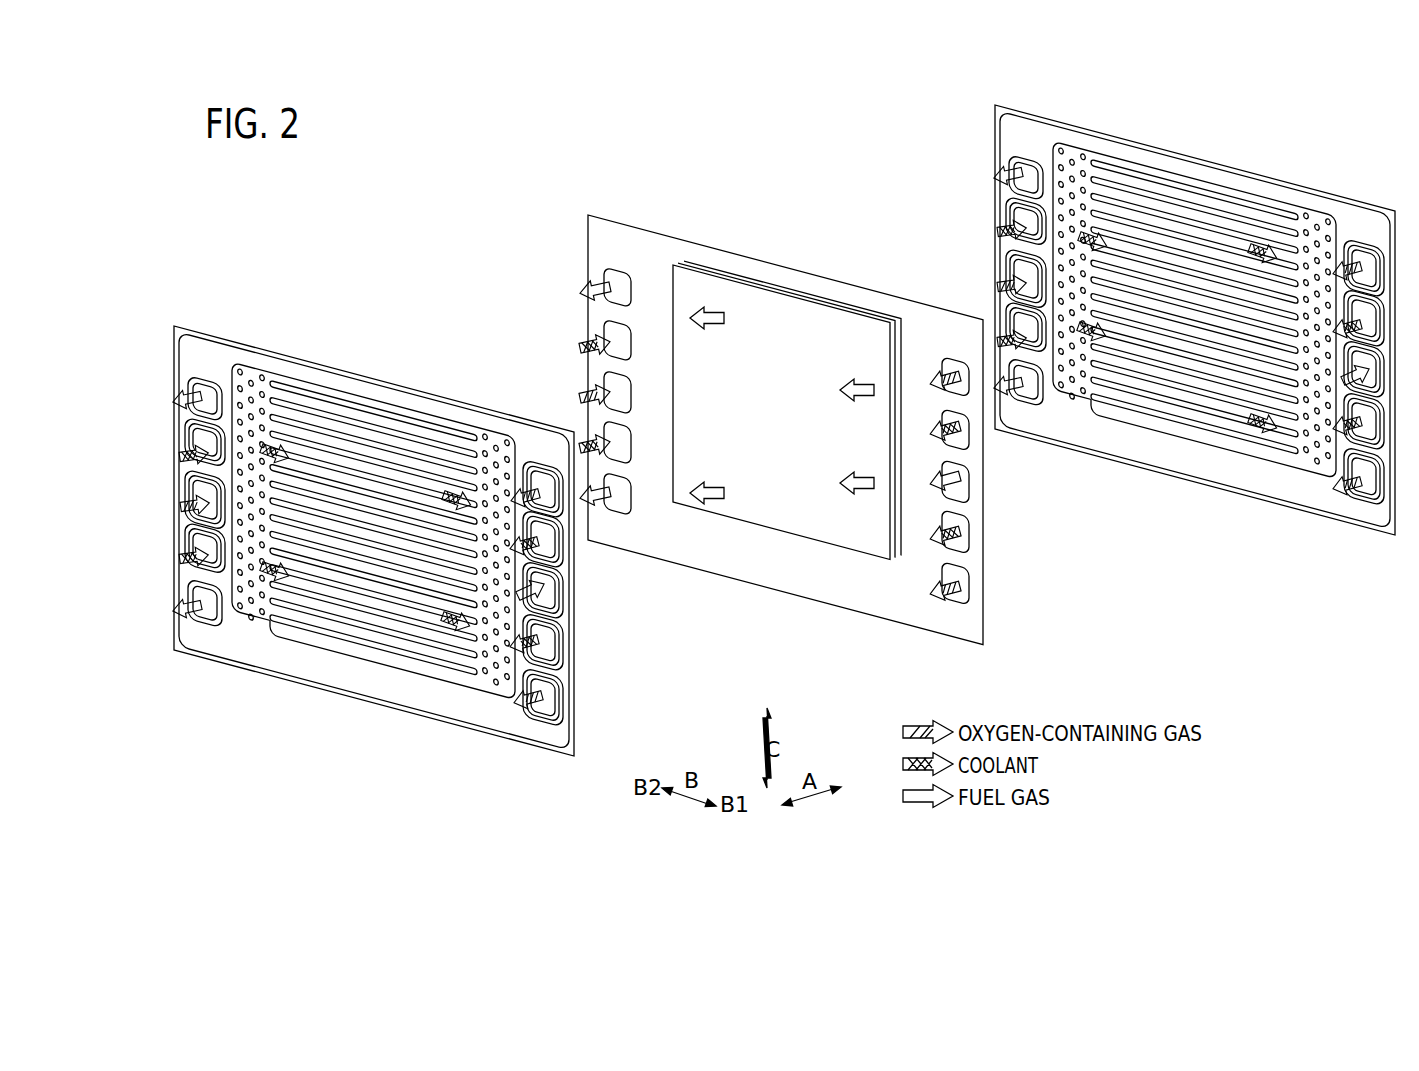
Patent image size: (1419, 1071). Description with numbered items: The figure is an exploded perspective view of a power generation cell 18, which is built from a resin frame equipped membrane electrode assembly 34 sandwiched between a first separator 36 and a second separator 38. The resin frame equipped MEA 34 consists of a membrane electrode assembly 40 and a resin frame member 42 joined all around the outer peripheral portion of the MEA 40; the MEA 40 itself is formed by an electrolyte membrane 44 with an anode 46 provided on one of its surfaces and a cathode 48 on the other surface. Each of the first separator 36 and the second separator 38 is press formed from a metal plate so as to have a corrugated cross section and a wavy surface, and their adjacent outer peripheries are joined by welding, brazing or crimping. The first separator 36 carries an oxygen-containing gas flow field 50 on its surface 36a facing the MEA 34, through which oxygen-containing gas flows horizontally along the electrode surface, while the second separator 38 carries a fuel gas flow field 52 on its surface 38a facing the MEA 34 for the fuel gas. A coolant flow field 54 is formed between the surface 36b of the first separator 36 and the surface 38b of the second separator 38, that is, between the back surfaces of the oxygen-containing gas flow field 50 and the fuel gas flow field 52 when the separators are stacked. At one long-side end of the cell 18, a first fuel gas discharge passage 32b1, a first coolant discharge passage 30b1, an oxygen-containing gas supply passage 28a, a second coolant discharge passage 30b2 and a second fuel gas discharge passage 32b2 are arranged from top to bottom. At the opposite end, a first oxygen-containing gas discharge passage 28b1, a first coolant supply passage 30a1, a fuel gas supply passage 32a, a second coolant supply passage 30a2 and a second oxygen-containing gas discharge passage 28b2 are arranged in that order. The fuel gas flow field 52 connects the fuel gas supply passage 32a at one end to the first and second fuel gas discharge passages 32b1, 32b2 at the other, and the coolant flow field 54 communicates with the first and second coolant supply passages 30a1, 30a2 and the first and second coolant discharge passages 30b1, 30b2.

The power generation cell 18 is at (556, 172).
The resin frame equipped membrane electrode assembly 34 is at (755, 195).
The first separator 36 is at (178, 312).
The second separator 38 is at (984, 94).
The membrane electrode assembly 40 is at (732, 266).
The resin frame member 42 is at (690, 248).
The electrolyte membrane 44 is at (803, 523).
The anode 46 is at (785, 287).
The cathode 48 is at (755, 517).
The oxygen-containing gas flow field 50 is at (358, 432).
The fuel gas flow field 52 is at (1125, 178).
The coolant flow field 54 is at (326, 400).
The surface of the first separator 36a is at (440, 707).
The surface of the first separator 36b is at (388, 693).
The surface of the second separator 38a is at (1133, 450).
The surface of the second separator 38b is at (1160, 452).
The oxygen-containing gas supply passage 28a is at (560, 605).
The first oxygen-containing gas discharge passage 28b1 is at (205, 384).
The second oxygen-containing gas discharge passage 28b2 is at (204, 613).
The first coolant supply passage 30a1 is at (207, 447).
The second coolant supply passage 30a2 is at (212, 560).
The first coolant discharge passage 30b1 is at (556, 555).
The second coolant discharge passage 30b2 is at (562, 650).
The fuel gas supply passage 32a is at (210, 512).
The first fuel gas discharge passage 32b1 is at (540, 470).
The second fuel gas discharge passage 32b2 is at (565, 702).